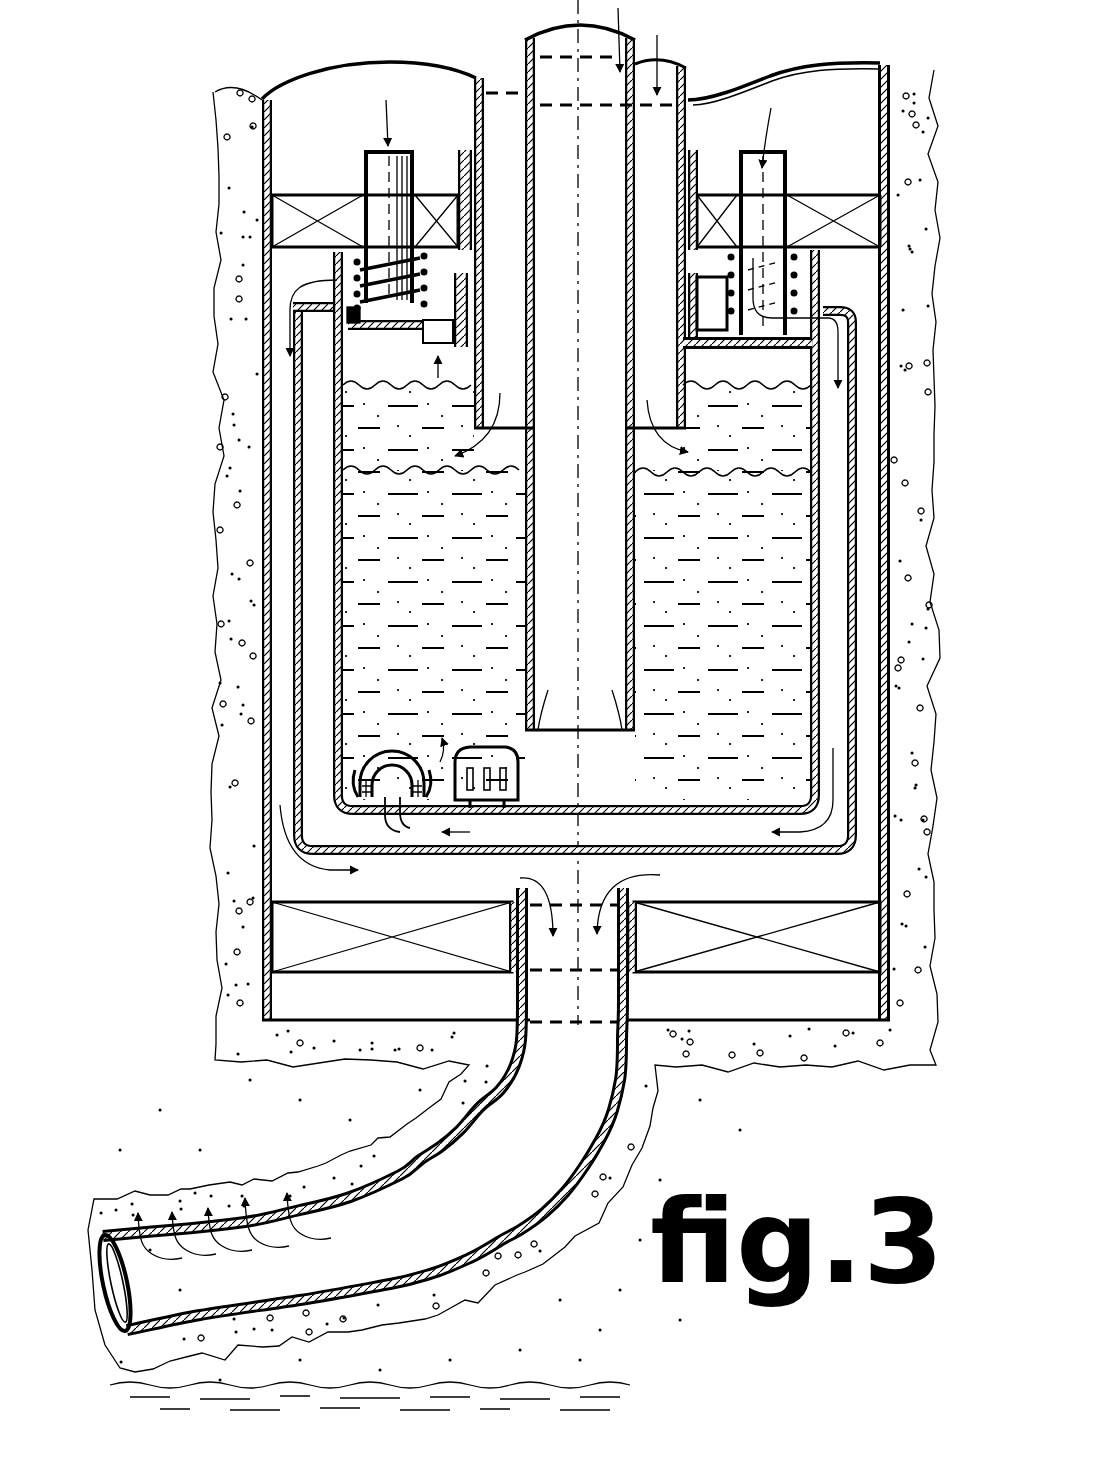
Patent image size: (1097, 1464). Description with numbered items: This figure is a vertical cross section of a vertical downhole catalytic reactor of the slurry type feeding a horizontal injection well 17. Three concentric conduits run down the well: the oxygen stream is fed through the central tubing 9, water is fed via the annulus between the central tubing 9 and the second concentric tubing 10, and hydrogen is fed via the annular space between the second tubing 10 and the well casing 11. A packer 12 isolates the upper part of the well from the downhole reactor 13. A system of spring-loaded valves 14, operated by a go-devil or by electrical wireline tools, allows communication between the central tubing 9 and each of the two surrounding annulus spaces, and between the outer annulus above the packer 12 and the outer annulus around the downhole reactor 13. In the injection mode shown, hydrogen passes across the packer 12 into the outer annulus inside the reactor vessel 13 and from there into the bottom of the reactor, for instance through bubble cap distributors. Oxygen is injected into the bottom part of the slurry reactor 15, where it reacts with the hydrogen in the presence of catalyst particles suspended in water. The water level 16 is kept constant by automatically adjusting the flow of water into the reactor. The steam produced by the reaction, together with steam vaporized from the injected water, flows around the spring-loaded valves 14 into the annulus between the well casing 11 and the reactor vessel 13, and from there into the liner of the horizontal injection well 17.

The central tubing 9 is at (526, 38).
The second concentric tubing 10 is at (470, 76).
The well casing 11 is at (878, 143).
The packer 12 is at (340, 194).
The downhole reactor 13 is at (826, 315).
The spring-loaded valves 14 is at (418, 346).
The slurry reactor 15 is at (613, 742).
The water level 16 is at (766, 383).
The horizontal injection well 17 is at (474, 1244).